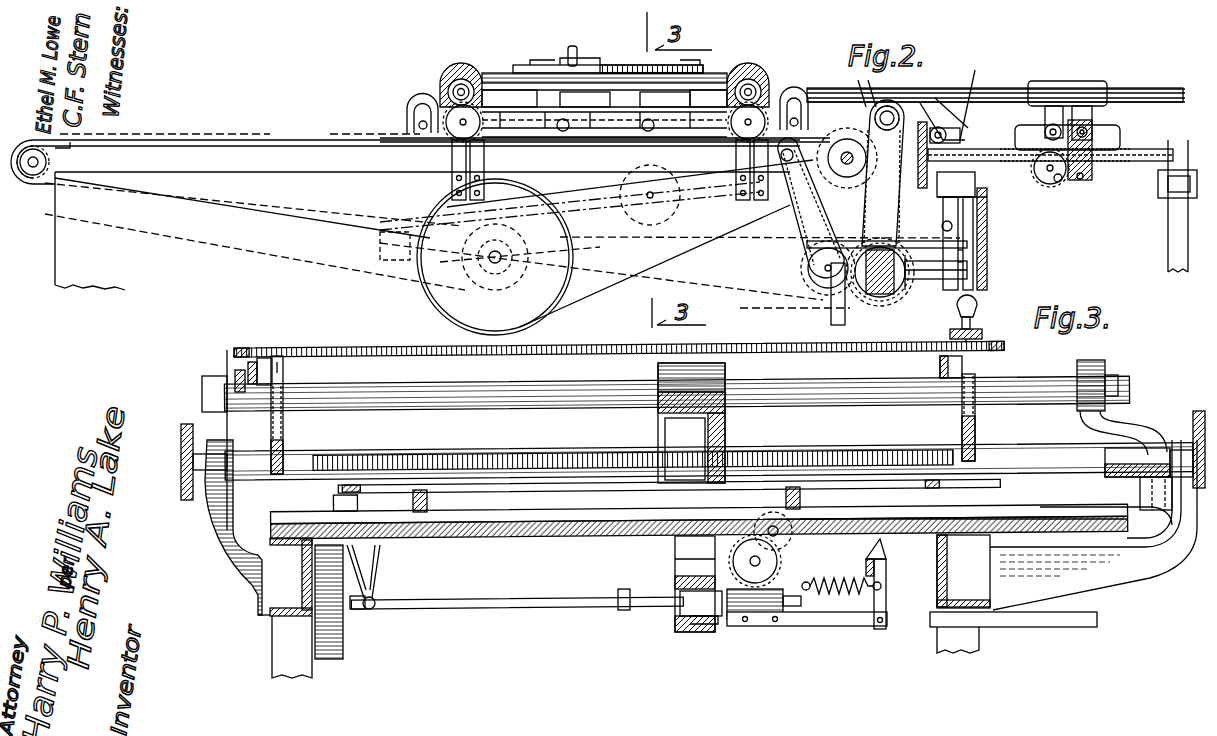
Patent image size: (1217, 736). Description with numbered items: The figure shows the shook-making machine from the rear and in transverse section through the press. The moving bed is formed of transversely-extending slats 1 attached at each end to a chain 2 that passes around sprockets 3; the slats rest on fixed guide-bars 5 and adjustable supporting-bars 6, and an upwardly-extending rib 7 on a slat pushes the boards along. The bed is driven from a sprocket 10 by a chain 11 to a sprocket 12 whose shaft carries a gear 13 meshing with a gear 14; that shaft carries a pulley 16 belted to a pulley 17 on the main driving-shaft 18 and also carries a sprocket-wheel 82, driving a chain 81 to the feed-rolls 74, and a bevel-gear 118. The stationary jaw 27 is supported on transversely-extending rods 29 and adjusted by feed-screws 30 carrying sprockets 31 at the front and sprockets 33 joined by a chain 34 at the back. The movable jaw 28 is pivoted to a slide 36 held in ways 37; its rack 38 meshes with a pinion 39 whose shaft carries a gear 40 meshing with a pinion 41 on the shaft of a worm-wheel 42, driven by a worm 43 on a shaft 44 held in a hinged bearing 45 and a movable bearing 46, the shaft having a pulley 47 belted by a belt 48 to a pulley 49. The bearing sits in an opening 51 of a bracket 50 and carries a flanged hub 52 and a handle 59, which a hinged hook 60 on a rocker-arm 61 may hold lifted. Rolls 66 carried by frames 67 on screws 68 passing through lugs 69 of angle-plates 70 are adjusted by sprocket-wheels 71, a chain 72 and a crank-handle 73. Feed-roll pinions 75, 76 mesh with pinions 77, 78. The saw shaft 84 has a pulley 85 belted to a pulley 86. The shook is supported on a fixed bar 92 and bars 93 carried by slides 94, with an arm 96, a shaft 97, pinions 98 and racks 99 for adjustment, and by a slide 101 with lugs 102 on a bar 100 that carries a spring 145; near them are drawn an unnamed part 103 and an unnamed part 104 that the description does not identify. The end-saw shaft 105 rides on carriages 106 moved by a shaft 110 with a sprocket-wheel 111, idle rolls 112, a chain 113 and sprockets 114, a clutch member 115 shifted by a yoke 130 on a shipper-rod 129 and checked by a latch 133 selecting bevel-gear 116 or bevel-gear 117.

In FIG. 2, the slats 1 is at (212, 141).
In FIG. 3, the slats 1 is at (600, 508).
In FIG. 2, the chain 2 is at (308, 143).
In FIG. 2, the sprockets 3 is at (33, 186).
In FIG. 3, the fixed guide-bars 5 is at (336, 486).
In FIG. 3, the adjustable supporting-bars 6 is at (428, 500).
In FIG. 2, the upwardly-extending rib 7 is at (62, 150).
In FIG. 2, the sprocket 10 is at (834, 140).
In FIG. 2, the chain 11 is at (800, 220).
In FIG. 2, the sprocket 12 is at (808, 266).
In FIG. 2, the gear 13 is at (810, 284).
In FIG. 2, the gear 14 is at (890, 298).
In FIG. 2, the pulley 16 is at (916, 282).
In FIG. 2, the pulley 17 is at (488, 272).
In FIG. 2, the main driving-shaft 18 is at (488, 257).
In FIG. 2, the stationary jaw 27 is at (812, 88).
In FIG. 3, the stationary jaw 27 is at (760, 454).
In FIG. 3, the movable jaw 28 is at (1112, 470).
In FIG. 2, the transversely-extending rods 29 is at (455, 73).
In FIG. 3, the transversely-extending rods 29 is at (470, 407).
In FIG. 2, the feed-screw 30 is at (420, 96).
In FIG. 3, the feed-screw 30 is at (545, 447).
In FIG. 3, the sprocket 31 is at (1194, 424).
In FIG. 2, the sprocket 33 is at (452, 148).
In FIG. 3, the sprocket 33 is at (181, 466).
In FIG. 2, the chain 34 is at (580, 141).
In FIG. 3, the slide 36 is at (1035, 500).
In FIG. 3, the ways 37 is at (572, 536).
In FIG. 3, the rack 38 is at (865, 518).
In FIG. 3, the pinion 39 is at (795, 539).
In FIG. 3, the gear 40 is at (782, 555).
In FIG. 3, the pinion 41 is at (680, 559).
In FIG. 3, the worm-wheel 42 is at (678, 572).
In FIG. 3, the worm 43 is at (756, 627).
In FIG. 2, the shaft 44 is at (655, 196).
In FIG. 3, the shaft 44 is at (520, 606).
In FIG. 3, the hinged bearing 45 is at (390, 612).
In FIG. 3, the bearing 46 is at (796, 609).
In FIG. 2, the pulley 47 is at (672, 220).
In FIG. 3, the pulley 47 is at (340, 660).
In FIG. 2, the belt 48 is at (600, 246).
In FIG. 2, the pulley 49 is at (500, 290).
In FIG. 3, the bracket 50 is at (685, 630).
In FIG. 3, the opening 51 is at (700, 635).
In FIG. 3, the flanged hub 52 is at (625, 611).
In FIG. 3, the handle 59 is at (1040, 628).
In FIG. 3, the hinged hook 60 is at (887, 549).
In FIG. 3, the rocker-arm 61 is at (888, 567).
In FIG. 2, the rolls 66 is at (412, 136).
In FIG. 3, the rolls 66 is at (326, 451).
In FIG. 2, the frames 67 is at (410, 120).
In FIG. 3, the frames 67 is at (285, 441).
In FIG. 2, the screws 68 is at (520, 96).
In FIG. 3, the screws 68 is at (286, 396).
In FIG. 3, the lugs 69 is at (286, 347).
In FIG. 2, the angle-plates 70 is at (605, 58).
In FIG. 3, the angle-plates 70 is at (246, 362).
In FIG. 2, the sprocket-wheel 71 is at (531, 60).
In FIG. 3, the sprocket-wheel 71 is at (983, 336).
In FIG. 2, the chain 72 is at (620, 65).
In FIG. 3, the chain 72 is at (482, 357).
In FIG. 2, the crank-handle 73 is at (572, 46).
In FIG. 3, the crank-handle 73 is at (978, 312).
In FIG. 2, the feed-rolls 74 is at (878, 104).
In FIG. 2, the pinion 75 is at (900, 105).
In FIG. 2, the pinion 76 is at (883, 165).
In FIG. 2, the pinion 77 is at (930, 103).
In FIG. 2, the pinion 78 is at (966, 126).
In FIG. 2, the chain 81 is at (822, 206).
In FIG. 2, the sprocket-wheel 82 is at (864, 300).
In FIG. 2, the shaft 84 is at (816, 170).
In FIG. 2, the pulley 85 is at (850, 133).
In FIG. 2, the pulley 86 is at (420, 283).
In FIG. 2, the fixed bar 92 is at (962, 136).
In FIG. 2, the bars 93 is at (1045, 131).
In FIG. 2, the slides 94 is at (1120, 150).
In FIG. 2, the arm 96 is at (1044, 184).
In FIG. 2, the shaft 97 is at (1058, 190).
In FIG. 2, the pinions 98 is at (1080, 180).
In FIG. 2, the racks 99 is at (1040, 172).
In FIG. 2, the bar 100 is at (1140, 83).
In FIG. 2, the slide 101 is at (1056, 81).
In FIG. 2, the lugs 102 is at (1083, 106).
In FIG. 2, the plate 103 is at (925, 191).
In FIG. 2, the pin 104 is at (1086, 178).
In FIG. 2, the shaft 105 is at (1166, 172).
In FIG. 2, the carriages 106 is at (966, 184).
In FIG. 2, the shaft 110 is at (976, 216).
In FIG. 2, the sprocket-wheel 111 is at (977, 206).
In FIG. 2, the idle rolls 112 is at (986, 240).
In FIG. 2, the chain 113 is at (1000, 247).
In FIG. 2, the sprockets 114 is at (986, 262).
In FIG. 2, the clutch member 115 is at (880, 306).
In FIG. 2, the bevel-gear 116 is at (906, 292).
In FIG. 2, the bevel-gear 117 is at (838, 326).
In FIG. 2, the bevel-gear 118 is at (882, 187).
In FIG. 2, the shipper-rod 129 is at (988, 276).
In FIG. 2, the yoke 130 is at (910, 249).
In FIG. 2, the latch 133 is at (942, 228).
In FIG. 2, the spring 145 is at (976, 108).